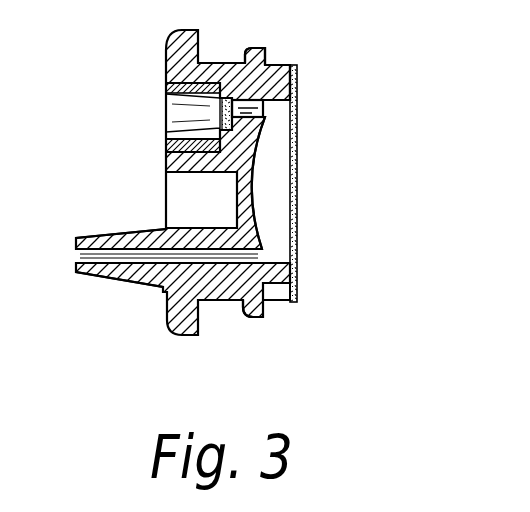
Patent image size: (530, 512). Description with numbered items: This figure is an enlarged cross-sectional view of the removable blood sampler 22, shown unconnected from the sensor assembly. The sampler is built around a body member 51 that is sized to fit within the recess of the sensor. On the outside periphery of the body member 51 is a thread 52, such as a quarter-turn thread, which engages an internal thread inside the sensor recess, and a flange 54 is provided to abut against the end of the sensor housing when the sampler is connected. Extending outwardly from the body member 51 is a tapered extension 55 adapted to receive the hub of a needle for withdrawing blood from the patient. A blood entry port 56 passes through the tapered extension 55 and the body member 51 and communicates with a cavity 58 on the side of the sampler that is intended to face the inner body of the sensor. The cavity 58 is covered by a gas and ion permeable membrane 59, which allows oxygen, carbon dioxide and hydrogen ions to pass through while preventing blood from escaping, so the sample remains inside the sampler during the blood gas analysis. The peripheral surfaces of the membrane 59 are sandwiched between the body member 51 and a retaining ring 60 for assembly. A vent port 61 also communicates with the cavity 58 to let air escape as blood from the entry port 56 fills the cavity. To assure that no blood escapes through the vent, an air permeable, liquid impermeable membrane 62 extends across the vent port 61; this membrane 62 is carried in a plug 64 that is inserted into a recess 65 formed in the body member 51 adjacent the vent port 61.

The blood sampler 22 is at (378, 185).
The body member 51 is at (172, 296).
The thread 52 is at (255, 51).
The flange 54 is at (198, 327).
The tapered extension 55 is at (110, 236).
The blood entry port 56 is at (84, 255).
The cavity 58 is at (295, 224).
The gas and ion permeable membrane 59 is at (291, 164).
The retaining ring 60 is at (277, 72).
The vent port 61 is at (238, 107).
The air permeable, liquid impermeable membrane 62 is at (205, 115).
The plug 64 is at (168, 90).
The recess 65 is at (168, 142).